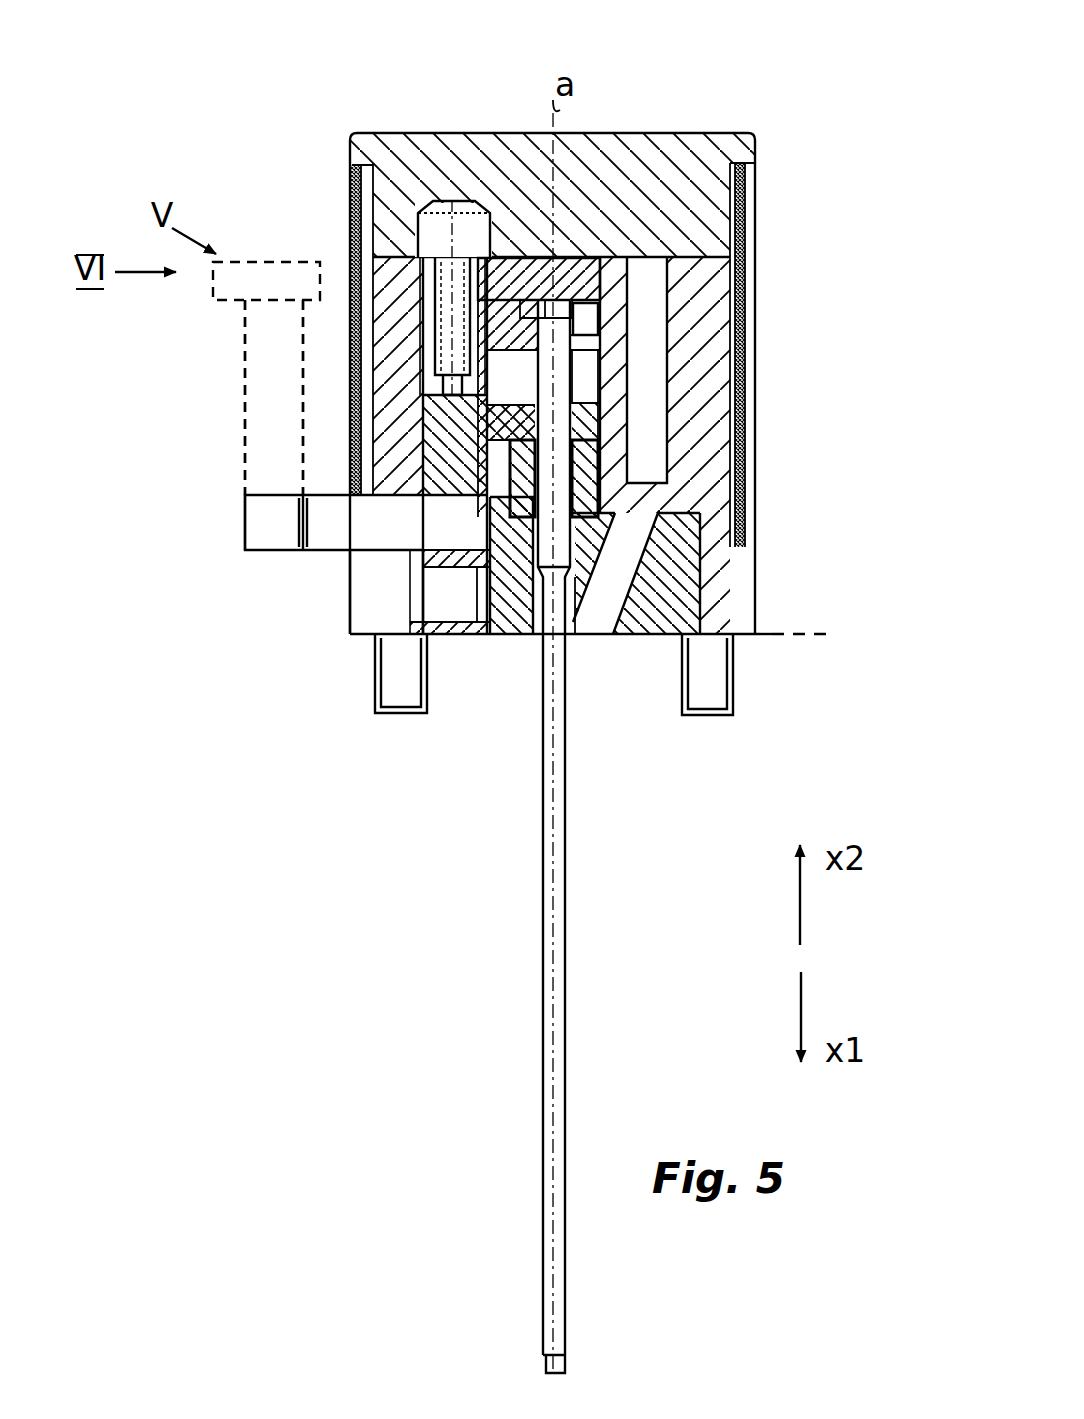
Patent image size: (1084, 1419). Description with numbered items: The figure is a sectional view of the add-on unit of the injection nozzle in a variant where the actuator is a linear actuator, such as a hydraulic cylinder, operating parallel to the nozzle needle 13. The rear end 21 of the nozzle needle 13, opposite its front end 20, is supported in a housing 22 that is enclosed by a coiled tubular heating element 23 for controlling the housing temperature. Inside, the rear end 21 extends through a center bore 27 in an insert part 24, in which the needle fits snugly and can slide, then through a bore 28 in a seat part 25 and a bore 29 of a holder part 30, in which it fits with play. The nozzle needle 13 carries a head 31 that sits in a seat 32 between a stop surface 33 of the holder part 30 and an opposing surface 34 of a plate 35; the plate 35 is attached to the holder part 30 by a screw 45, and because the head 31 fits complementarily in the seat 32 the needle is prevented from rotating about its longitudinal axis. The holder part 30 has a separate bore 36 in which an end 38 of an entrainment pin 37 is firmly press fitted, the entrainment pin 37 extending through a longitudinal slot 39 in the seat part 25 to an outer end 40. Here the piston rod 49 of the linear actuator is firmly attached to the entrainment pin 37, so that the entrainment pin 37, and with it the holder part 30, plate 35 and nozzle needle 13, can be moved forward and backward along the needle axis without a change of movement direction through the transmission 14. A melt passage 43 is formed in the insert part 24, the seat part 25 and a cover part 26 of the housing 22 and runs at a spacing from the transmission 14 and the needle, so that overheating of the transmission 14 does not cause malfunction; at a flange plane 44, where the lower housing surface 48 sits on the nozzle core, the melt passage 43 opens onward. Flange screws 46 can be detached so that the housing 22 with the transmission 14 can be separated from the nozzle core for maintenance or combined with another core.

The nozzle needle 13 is at (545, 935).
The transmission 14 is at (330, 450).
The front end 20 is at (548, 1322).
The rear end 21 is at (505, 312).
The housing 22 is at (338, 160).
The tubular heating element 23 is at (755, 163).
The insert part 24 is at (675, 583).
The seat part 25 is at (705, 437).
The cover part 26 is at (388, 154).
The center bore 27 is at (593, 472).
The bore 28 is at (515, 330).
The bore 29 is at (540, 318).
The holder part 30 is at (440, 430).
The head 31 is at (600, 302).
The seat 32 is at (612, 312).
The stop surface 33 is at (610, 332).
The opposing surface 34 is at (542, 300).
The plate 35 is at (576, 258).
The separate bore 36 is at (335, 438).
The entrainment pin 37 is at (335, 508).
The end 38 is at (478, 528).
The longitudinal slot 39 is at (372, 602).
The outer end 40 is at (335, 535).
The melt passage 43 is at (612, 205).
The flange plane 44 is at (835, 630).
The screw 45 is at (468, 232).
The flange screws 46 is at (400, 682).
The lower housing surface 48 is at (492, 636).
The piston rod 49 is at (268, 445).